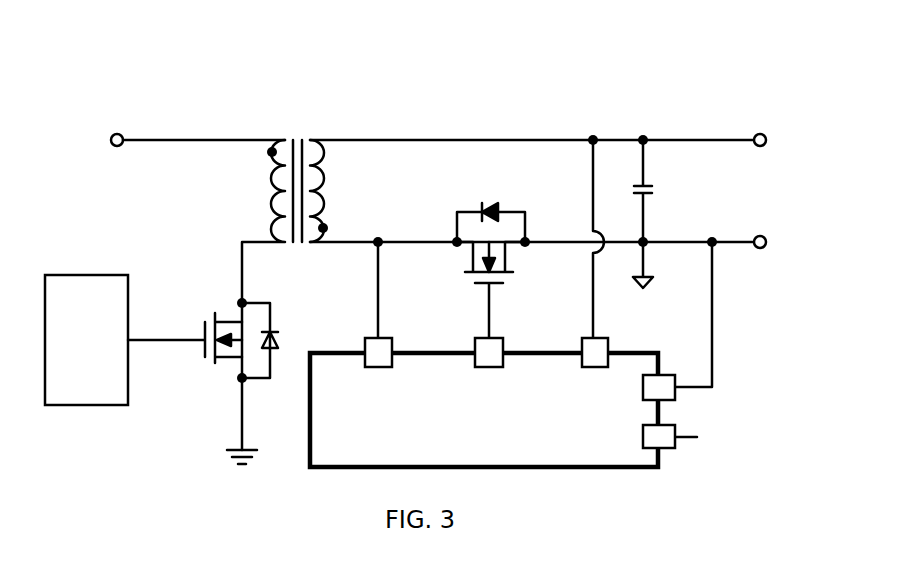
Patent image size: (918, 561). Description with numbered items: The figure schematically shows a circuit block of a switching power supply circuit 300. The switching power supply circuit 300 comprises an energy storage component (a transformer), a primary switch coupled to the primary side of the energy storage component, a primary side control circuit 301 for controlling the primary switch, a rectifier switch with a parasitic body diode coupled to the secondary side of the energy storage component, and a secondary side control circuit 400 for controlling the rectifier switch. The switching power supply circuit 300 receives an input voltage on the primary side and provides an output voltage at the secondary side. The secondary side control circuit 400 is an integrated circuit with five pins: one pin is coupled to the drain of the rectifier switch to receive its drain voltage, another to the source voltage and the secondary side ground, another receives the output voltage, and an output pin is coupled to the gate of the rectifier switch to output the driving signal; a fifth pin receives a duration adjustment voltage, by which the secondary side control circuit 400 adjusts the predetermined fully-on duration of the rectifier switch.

The switching power supply circuit 300 is at (728, 50).
The primary side control circuit 301 is at (107, 352).
The secondary side control circuit 400 is at (504, 442).